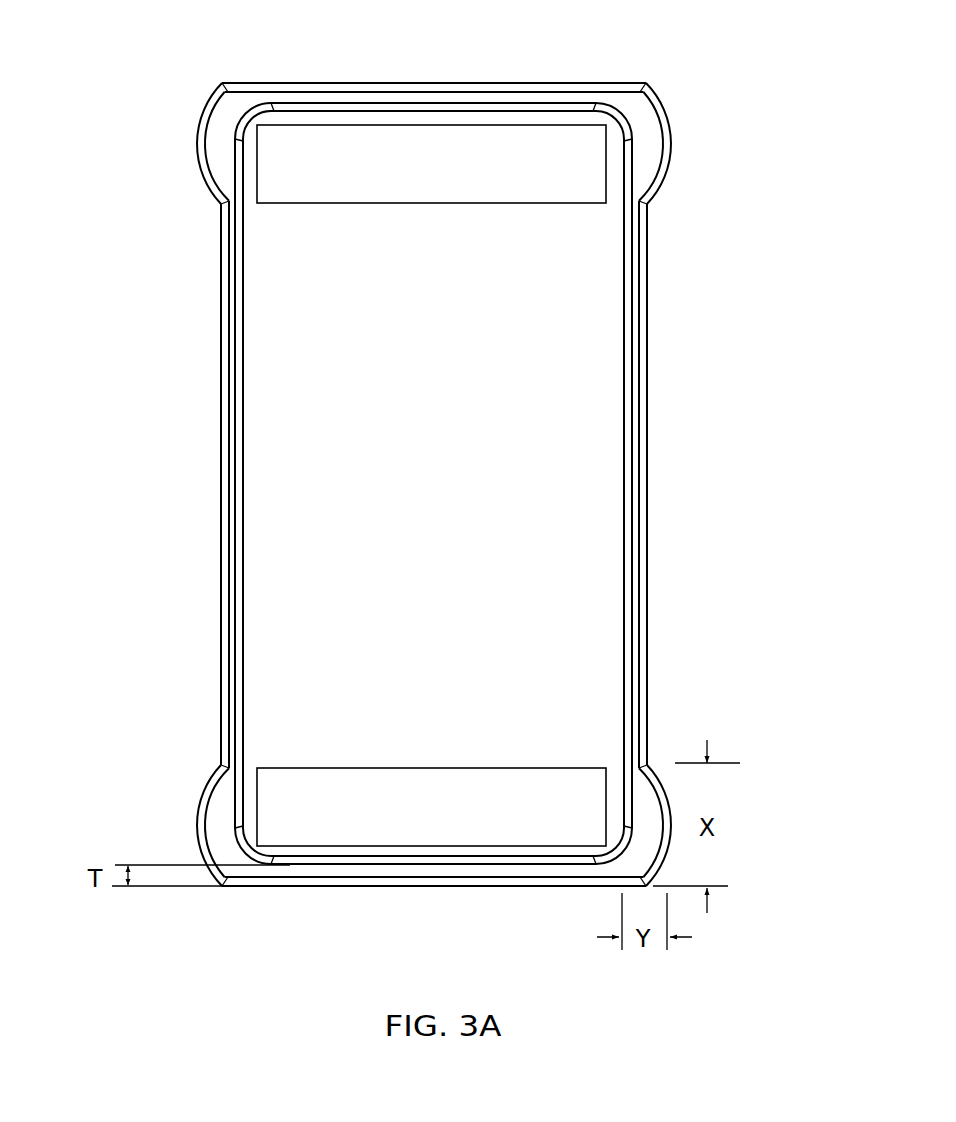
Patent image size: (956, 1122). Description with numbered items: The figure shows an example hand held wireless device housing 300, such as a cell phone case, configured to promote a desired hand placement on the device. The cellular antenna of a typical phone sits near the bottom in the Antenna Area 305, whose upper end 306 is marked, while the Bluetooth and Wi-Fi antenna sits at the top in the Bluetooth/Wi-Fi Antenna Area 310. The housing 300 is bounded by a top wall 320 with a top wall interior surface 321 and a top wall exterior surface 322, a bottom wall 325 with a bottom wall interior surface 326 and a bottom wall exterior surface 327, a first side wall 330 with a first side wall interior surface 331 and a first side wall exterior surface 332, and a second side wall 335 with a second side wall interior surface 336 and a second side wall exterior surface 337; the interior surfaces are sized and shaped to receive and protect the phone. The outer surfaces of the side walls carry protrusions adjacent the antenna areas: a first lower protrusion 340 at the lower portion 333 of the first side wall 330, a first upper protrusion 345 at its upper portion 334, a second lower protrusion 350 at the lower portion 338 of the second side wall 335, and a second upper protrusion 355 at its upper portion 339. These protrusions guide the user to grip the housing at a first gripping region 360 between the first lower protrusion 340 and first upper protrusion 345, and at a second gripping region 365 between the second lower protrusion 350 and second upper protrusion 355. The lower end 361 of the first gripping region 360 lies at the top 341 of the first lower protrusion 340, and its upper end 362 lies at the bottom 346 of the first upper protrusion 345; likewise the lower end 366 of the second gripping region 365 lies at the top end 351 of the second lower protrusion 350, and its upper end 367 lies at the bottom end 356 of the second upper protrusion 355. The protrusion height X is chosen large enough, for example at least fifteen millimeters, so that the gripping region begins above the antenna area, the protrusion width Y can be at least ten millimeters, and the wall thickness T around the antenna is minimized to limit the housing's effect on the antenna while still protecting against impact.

The hand held wireless device housing 300 is at (685, 178).
The Antenna Area 305 is at (399, 768).
The upper end of the antenna area 306 is at (548, 768).
The Bluetooth/Wi-Fi Antenna Area 310 is at (436, 204).
The top wall 320 is at (552, 82).
The top wall interior surface 321 is at (335, 112).
The top wall exterior surface 322 is at (445, 82).
The bottom wall 325 is at (503, 887).
The bottom wall interior surface 326 is at (360, 860).
The bottom wall exterior surface 327 is at (418, 887).
The first side wall 330 is at (220, 458).
The first side wall interior surface 331 is at (243, 298).
The first side wall exterior surface 332 is at (220, 550).
The lower portion of the first side wall 333 is at (177, 819).
The upper portion of the first side wall 334 is at (193, 175).
The second side wall 335 is at (647, 320).
The second side wall interior surface 336 is at (622, 330).
The second side wall exterior surface 337 is at (647, 277).
The lower portion of the second side wall 338 is at (738, 864).
The upper portion of the second side wall 339 is at (677, 82).
The first lower protrusion 340 is at (199, 846).
The top of the first lower protrusion 341 is at (220, 768).
The first upper protrusion 345 is at (193, 120).
The bottom of the first upper protrusion 346 is at (220, 202).
The second lower protrusion 350 is at (665, 802).
The top end of the second lower protrusion 351 is at (641, 769).
The second upper protrusion 355 is at (668, 127).
The bottom end of the second upper protrusion 356 is at (650, 195).
The first gripping region 360 is at (220, 385).
The lower end of the first gripping region 361 is at (219, 747).
The upper end of the first gripping region 362 is at (177, 237).
The second gripping region 365 is at (647, 412).
The lower end of the second gripping region 366 is at (640, 767).
The upper end of the second gripping region 367 is at (647, 203).